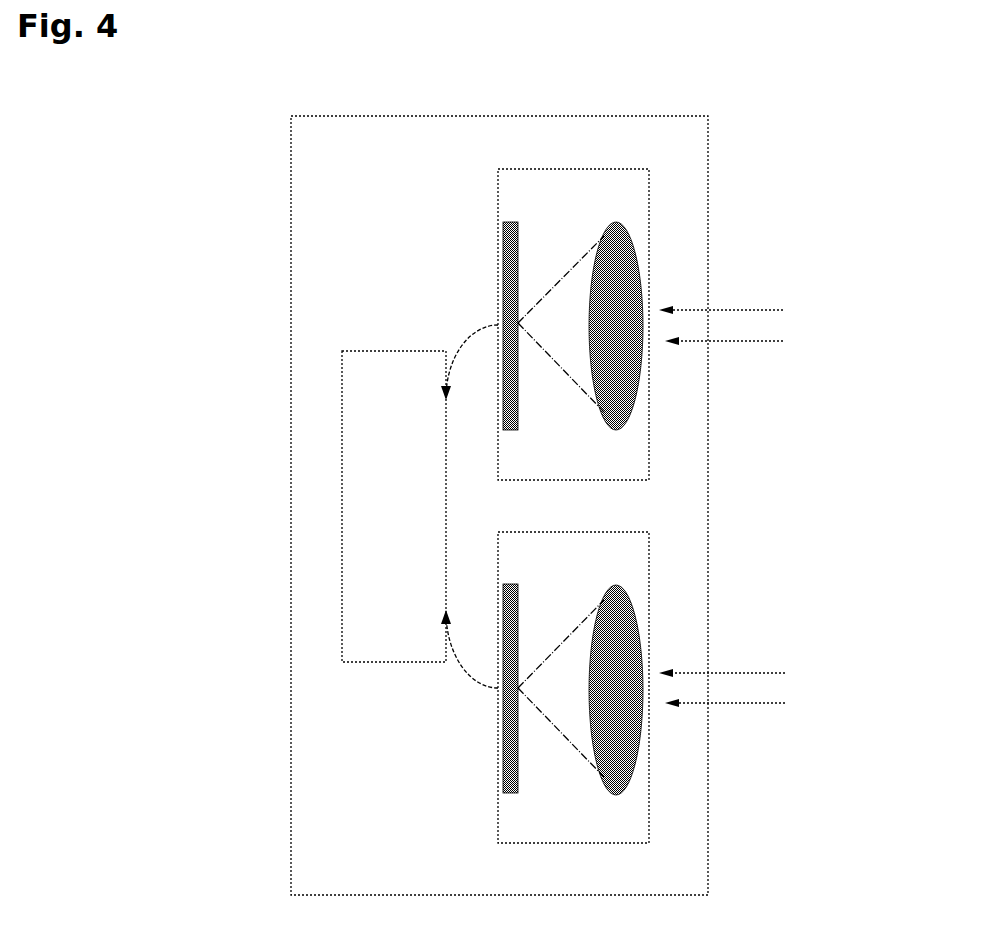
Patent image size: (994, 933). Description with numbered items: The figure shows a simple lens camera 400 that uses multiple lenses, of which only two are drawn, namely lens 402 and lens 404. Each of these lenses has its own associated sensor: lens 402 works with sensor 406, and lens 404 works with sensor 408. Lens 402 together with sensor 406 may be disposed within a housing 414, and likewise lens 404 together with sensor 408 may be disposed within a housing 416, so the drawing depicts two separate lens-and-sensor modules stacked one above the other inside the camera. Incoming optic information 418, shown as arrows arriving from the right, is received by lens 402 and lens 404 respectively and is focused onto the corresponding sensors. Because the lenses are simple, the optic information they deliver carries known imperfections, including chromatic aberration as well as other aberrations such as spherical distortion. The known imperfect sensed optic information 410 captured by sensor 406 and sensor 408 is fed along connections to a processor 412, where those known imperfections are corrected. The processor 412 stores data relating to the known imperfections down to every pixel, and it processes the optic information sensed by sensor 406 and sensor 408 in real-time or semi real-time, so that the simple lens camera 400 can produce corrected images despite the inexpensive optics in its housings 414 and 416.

The simple lens camera 400 is at (366, 180).
The lens 402 is at (627, 257).
The lens 404 is at (620, 640).
The sensor 406 is at (518, 262).
The sensor 408 is at (518, 648).
The known imperfect sensed optic information 410 is at (465, 345).
The processor 412 is at (379, 540).
The housing 414 is at (590, 464).
The housing 416 is at (590, 826).
The optic information 418 is at (746, 506).